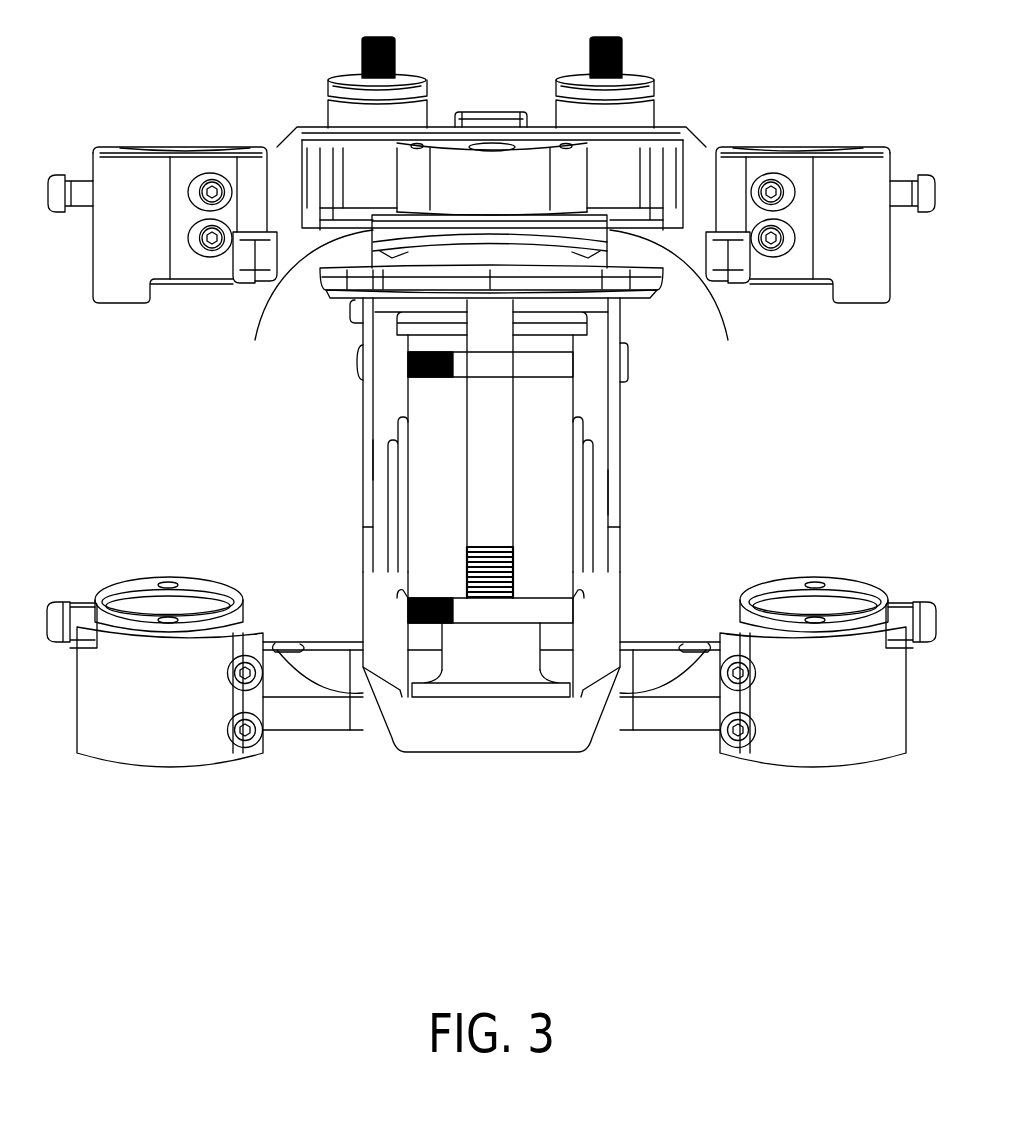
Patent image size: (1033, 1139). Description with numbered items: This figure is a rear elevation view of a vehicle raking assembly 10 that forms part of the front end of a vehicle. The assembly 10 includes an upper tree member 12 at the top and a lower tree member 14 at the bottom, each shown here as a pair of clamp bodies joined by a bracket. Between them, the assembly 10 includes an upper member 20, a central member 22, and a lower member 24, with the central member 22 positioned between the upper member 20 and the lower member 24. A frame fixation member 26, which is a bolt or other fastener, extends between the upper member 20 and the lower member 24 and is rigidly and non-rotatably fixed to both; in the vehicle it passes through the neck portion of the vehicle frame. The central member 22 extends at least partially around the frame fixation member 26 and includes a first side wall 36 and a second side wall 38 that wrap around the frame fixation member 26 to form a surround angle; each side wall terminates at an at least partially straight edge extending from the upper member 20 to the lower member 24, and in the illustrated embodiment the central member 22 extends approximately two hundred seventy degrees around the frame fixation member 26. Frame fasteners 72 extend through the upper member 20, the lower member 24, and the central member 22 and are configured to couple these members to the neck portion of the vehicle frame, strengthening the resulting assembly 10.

The vehicle raking assembly 10 is at (485, 445).
The upper tree member 12 is at (125, 257).
The lower tree member 14 is at (168, 740).
The upper member 20 is at (367, 228).
The central member 22 is at (370, 433).
The lower member 24 is at (372, 605).
The frame fixation member 26 is at (505, 457).
The first side wall 36 is at (370, 460).
The second side wall 38 is at (608, 493).
The frame fastener 72 is at (555, 362).